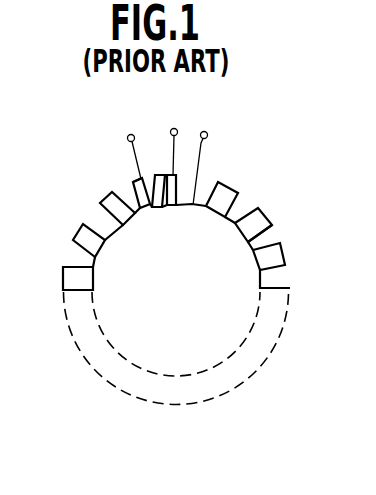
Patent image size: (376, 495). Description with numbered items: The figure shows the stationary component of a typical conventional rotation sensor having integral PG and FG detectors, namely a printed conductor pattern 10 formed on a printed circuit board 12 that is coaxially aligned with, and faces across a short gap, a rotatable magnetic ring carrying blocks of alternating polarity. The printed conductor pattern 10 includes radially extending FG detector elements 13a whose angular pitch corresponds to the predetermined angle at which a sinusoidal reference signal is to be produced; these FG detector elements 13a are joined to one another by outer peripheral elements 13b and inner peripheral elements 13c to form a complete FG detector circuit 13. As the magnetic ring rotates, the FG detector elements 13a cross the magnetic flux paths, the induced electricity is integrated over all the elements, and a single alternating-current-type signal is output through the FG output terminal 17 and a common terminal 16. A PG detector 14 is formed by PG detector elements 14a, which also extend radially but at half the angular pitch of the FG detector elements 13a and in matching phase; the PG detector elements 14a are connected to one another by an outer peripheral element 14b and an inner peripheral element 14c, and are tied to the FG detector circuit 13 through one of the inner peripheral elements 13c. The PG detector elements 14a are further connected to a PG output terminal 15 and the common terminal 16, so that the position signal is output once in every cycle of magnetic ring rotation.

The printed conductor pattern 10 is at (258, 163).
The stator core 12 is at (83, 181).
The FG detector circuit 13 is at (276, 203).
The FG detector element 13a is at (100, 211).
The outer peripheral element 13b is at (77, 238).
The inner peripheral element 13c is at (110, 234).
The coil 14 is at (160, 157).
The PG detector element 14a is at (133, 197).
The outer peripheral element 14b is at (132, 185).
The inner peripheral element 14c is at (168, 206).
The PG output terminal 15 is at (146, 148).
The common terminal 16 is at (176, 148).
The FG output terminal 17 is at (206, 155).